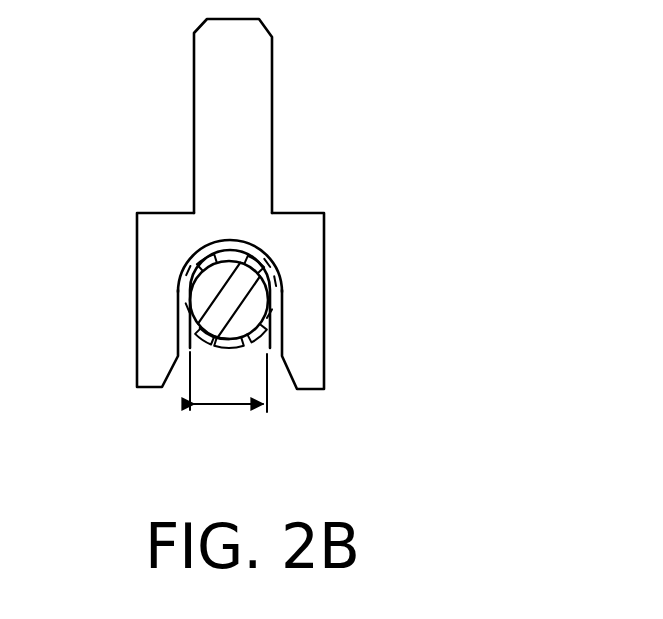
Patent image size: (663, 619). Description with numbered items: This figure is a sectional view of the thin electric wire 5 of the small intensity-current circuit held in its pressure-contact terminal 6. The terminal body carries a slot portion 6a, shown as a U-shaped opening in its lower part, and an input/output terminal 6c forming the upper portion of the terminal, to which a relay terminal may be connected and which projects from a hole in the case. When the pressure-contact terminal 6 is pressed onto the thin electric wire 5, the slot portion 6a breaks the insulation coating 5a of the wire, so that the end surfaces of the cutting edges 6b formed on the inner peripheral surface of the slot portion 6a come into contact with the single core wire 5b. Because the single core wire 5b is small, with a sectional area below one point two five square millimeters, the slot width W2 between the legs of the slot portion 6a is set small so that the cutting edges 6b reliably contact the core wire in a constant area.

The pressure-contact terminal 6 is at (287, 204).
The input/output terminal 6c is at (252, 135).
The slot portion 6a is at (284, 297).
The cutting edge 6b is at (272, 346).
The thin electric wire 5 is at (168, 360).
The insulation coating 5a is at (200, 340).
The single core wire 5b is at (212, 293).
The slot width W2 is at (233, 406).